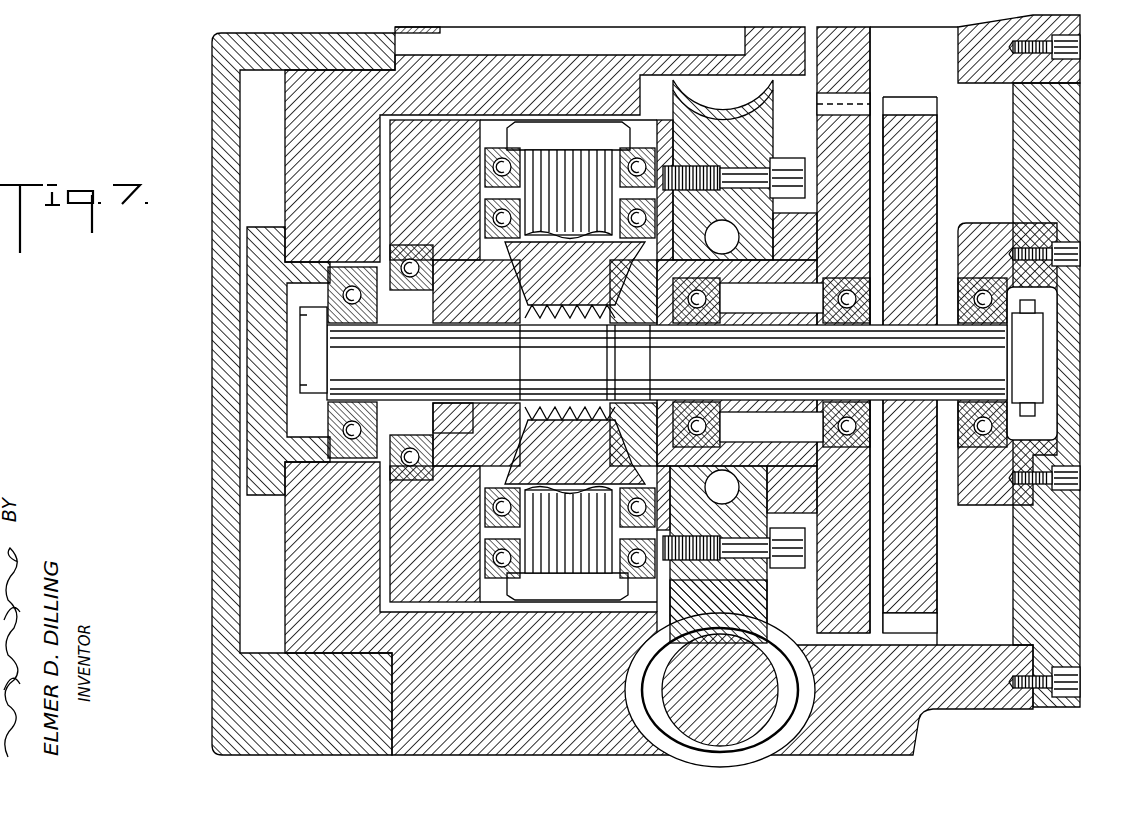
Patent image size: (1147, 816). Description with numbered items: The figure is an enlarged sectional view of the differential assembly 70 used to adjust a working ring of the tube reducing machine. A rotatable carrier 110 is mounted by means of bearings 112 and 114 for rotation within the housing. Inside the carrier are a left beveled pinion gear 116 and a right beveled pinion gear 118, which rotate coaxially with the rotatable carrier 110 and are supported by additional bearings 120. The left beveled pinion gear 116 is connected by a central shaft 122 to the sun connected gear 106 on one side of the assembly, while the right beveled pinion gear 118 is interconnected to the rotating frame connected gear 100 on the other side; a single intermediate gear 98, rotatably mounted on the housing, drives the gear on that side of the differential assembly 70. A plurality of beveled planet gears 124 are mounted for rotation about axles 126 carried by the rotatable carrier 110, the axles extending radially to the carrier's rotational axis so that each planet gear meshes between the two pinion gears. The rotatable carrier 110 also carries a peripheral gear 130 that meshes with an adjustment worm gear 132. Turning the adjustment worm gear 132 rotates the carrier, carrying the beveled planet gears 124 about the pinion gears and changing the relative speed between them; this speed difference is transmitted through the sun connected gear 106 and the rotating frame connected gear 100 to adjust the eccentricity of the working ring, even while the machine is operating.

The differential assembly 70 is at (1089, 333).
The intermediate gear 98 is at (870, 53).
The rotating frame connected gear 100 is at (770, 600).
The sun connected gear 106 is at (925, 557).
The rotatable carrier 110 is at (431, 135).
The bearing 112 is at (425, 247).
The bearing 114 is at (733, 490).
The left beveled pinion gear 116 is at (460, 417).
The right beveled pinion gear 118 is at (650, 307).
The bearings 120 is at (327, 423).
The central shaft 122 is at (777, 374).
The beveled planet gears 124 is at (520, 404).
The axles 126 is at (553, 566).
The peripheral gear 130 is at (822, 620).
The adjustment worm gear 132 is at (770, 712).